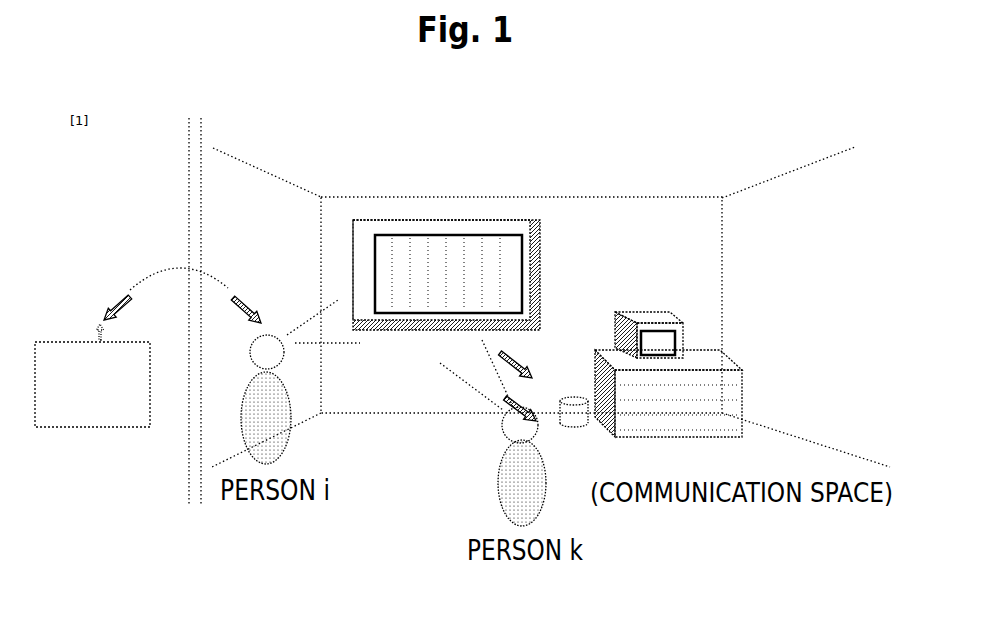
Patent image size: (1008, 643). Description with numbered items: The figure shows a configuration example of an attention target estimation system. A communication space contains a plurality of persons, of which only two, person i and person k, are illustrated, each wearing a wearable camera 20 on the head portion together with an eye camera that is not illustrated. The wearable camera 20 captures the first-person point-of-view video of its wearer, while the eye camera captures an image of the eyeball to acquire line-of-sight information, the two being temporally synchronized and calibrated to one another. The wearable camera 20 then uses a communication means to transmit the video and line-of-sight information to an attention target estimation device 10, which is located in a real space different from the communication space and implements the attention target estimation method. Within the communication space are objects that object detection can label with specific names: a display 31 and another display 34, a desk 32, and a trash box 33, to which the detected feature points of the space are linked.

The attention target estimation device 10 is at (72, 340).
The wearable camera 20 is at (284, 364).
The display 31 is at (648, 312).
The desk 32 is at (730, 360).
The trash box 33 is at (575, 396).
The display 34 is at (543, 252).